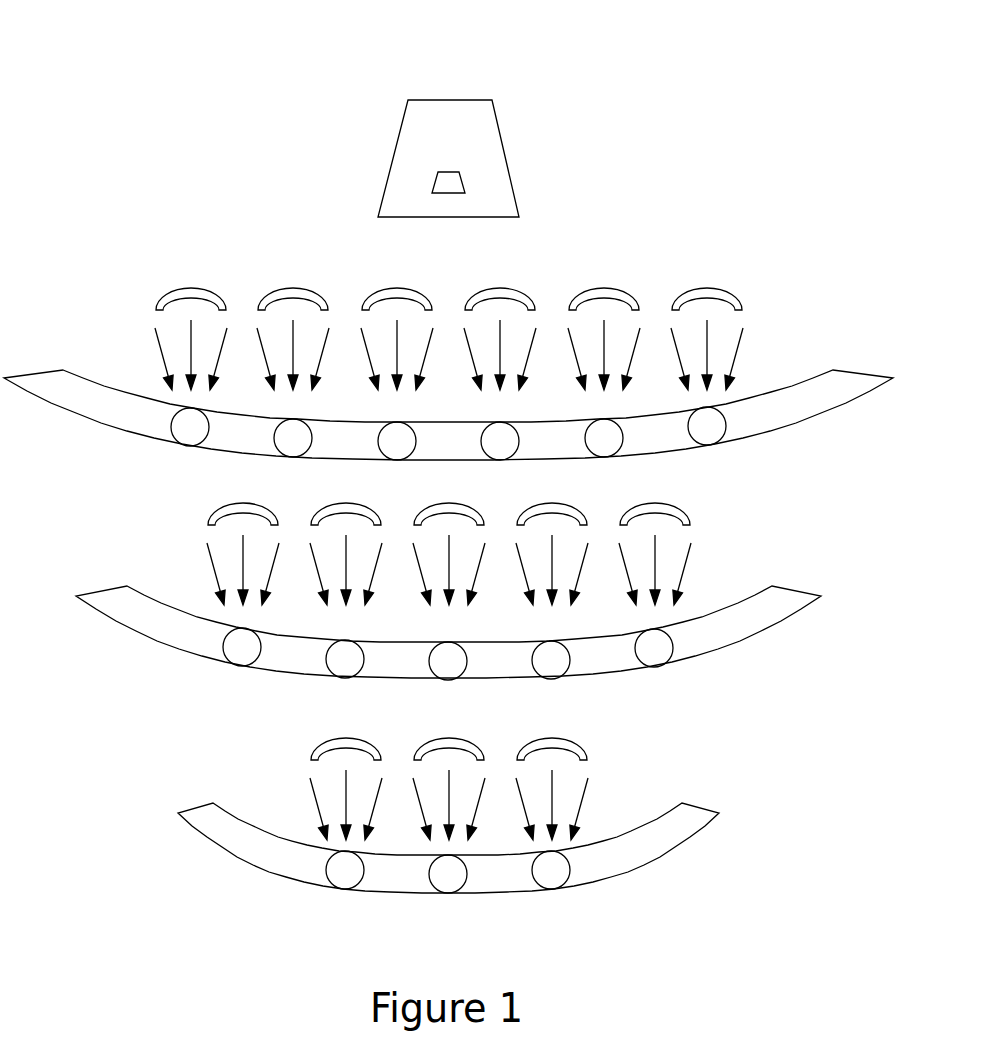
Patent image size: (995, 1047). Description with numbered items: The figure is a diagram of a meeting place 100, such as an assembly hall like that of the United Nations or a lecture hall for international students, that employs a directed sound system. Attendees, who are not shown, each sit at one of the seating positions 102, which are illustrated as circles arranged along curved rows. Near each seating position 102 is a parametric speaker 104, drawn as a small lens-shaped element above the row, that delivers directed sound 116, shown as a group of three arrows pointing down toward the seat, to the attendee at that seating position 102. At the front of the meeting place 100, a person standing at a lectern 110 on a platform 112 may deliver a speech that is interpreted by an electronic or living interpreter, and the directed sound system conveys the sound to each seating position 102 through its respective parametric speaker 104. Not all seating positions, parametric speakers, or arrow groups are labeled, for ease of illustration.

The meeting place 100 is at (163, 66).
The seating position 102 is at (190, 432).
The parametric speaker 104 is at (190, 288).
The lectern 110 is at (461, 180).
The platform 112 is at (390, 173).
The directed sound 116 is at (140, 315).